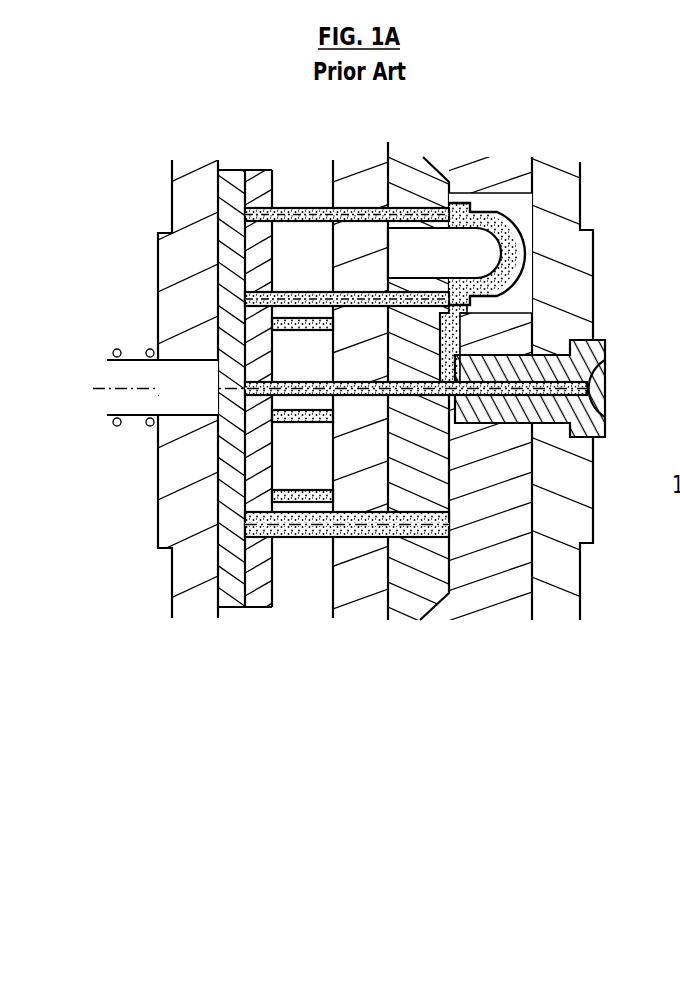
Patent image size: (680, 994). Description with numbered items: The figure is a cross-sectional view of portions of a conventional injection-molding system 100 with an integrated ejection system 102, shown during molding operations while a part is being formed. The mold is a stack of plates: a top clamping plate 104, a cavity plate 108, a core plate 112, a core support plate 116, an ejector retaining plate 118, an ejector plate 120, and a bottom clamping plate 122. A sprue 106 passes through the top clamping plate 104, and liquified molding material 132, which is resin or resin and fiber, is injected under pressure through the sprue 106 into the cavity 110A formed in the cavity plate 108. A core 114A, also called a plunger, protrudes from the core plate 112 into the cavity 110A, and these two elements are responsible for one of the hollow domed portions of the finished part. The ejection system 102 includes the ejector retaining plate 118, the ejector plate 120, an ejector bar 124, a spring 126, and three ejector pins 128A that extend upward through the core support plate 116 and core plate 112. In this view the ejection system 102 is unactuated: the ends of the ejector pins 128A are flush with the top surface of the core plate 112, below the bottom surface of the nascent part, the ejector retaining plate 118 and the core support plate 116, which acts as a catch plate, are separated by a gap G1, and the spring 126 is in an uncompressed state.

The injection-molding system 100 is at (276, 107).
The ejection system 102 is at (376, 689).
The top clamping plate 104 is at (563, 608).
The sprue 106 is at (605, 392).
The cavity plate 108 is at (480, 580).
The cavity 110A is at (518, 220).
The core plate 112 is at (417, 580).
The core 114A is at (455, 266).
The core support plate 116 is at (368, 598).
The ejector retaining plate 118 is at (258, 605).
The ejector plate 120 is at (227, 605).
The bottom clamping plate 122 is at (195, 600).
The ejector bar 124 is at (188, 401).
The spring 126 is at (148, 426).
The ejector pins 128A is at (305, 208).
The liquified molding material 132 is at (516, 218).
The gap G1 is at (333, 625).